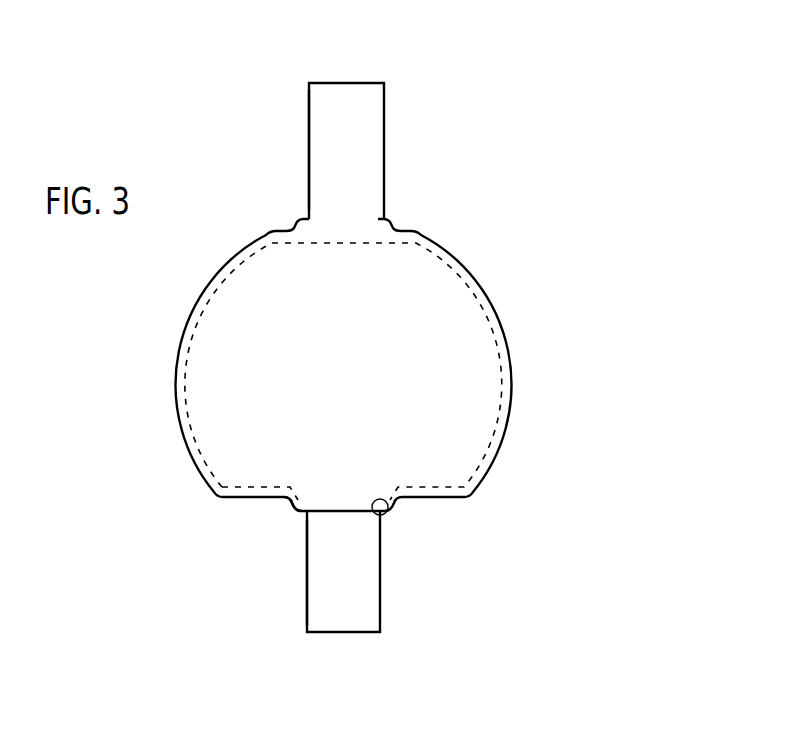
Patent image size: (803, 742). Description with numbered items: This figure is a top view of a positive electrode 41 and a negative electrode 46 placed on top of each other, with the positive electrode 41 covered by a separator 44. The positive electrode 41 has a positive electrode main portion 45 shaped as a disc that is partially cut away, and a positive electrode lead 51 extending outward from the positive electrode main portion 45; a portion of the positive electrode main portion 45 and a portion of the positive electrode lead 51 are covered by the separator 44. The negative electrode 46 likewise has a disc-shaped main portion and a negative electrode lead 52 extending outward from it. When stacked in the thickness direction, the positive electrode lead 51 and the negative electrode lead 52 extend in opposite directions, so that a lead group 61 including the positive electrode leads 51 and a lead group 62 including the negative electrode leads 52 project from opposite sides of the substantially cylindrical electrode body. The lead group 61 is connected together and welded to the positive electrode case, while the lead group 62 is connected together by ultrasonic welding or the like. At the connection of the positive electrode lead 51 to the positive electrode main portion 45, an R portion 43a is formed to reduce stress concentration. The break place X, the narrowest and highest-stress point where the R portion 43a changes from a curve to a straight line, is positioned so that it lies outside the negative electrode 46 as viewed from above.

The positive electrode 41 is at (381, 568).
The R portion 43a is at (285, 507).
The separator 44 is at (508, 372).
The positive electrode main portion 45 is at (200, 345).
The negative electrode 46 is at (384, 132).
The positive electrode lead 51 is at (368, 609).
The negative electrode lead 52 is at (360, 177).
The lead group 61 is at (307, 580).
The lead group 62 is at (309, 149).
The break place X is at (372, 500).